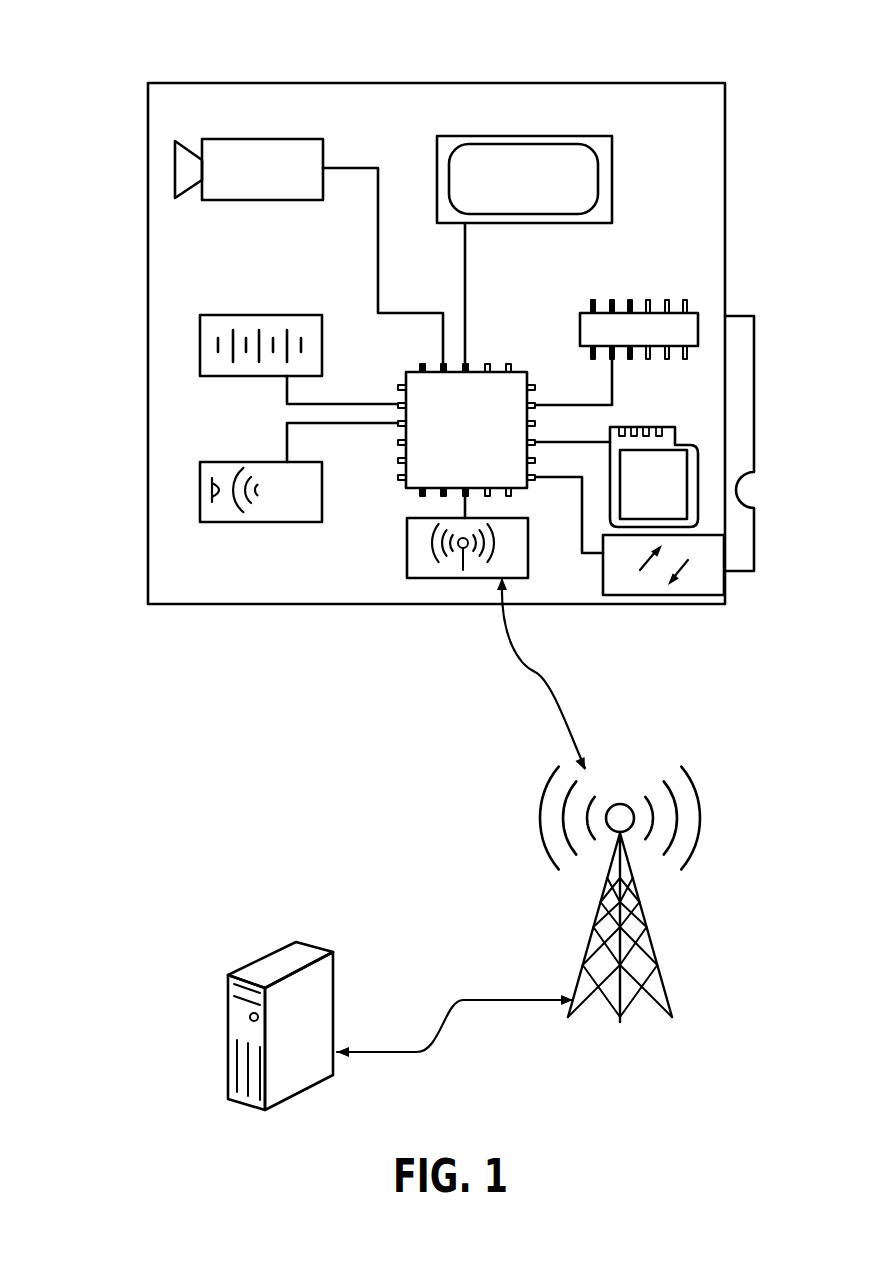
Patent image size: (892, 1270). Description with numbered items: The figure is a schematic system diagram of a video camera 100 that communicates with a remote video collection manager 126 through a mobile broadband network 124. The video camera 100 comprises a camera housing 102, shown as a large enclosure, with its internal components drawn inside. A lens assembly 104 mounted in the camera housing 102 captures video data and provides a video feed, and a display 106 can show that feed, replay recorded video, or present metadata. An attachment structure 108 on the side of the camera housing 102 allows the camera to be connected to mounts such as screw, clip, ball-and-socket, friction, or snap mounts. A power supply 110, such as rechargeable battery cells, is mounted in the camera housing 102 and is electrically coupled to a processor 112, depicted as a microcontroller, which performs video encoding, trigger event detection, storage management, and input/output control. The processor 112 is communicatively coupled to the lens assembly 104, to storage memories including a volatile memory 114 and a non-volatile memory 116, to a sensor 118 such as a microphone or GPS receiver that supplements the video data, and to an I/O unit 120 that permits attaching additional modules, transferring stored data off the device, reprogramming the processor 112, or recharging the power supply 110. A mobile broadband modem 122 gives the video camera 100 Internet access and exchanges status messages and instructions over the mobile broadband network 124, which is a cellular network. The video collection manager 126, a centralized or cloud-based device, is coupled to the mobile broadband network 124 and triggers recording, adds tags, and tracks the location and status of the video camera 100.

The video camera 100 is at (112, 44).
The camera housing 102 is at (687, 83).
The lens assembly 104 is at (303, 138).
The display 106 is at (592, 135).
The attachment structure 108 is at (757, 345).
The power supply 110 is at (293, 315).
The processor 112 is at (517, 372).
The volatile memory 114 is at (700, 310).
The non-volatile memory 116 is at (677, 433).
The sensor 118 is at (243, 525).
The I/O unit 120 is at (695, 597).
The mobile broadband modem 122 is at (406, 557).
The mobile broadband network 124 is at (683, 767).
The video collection manager 126 is at (308, 942).